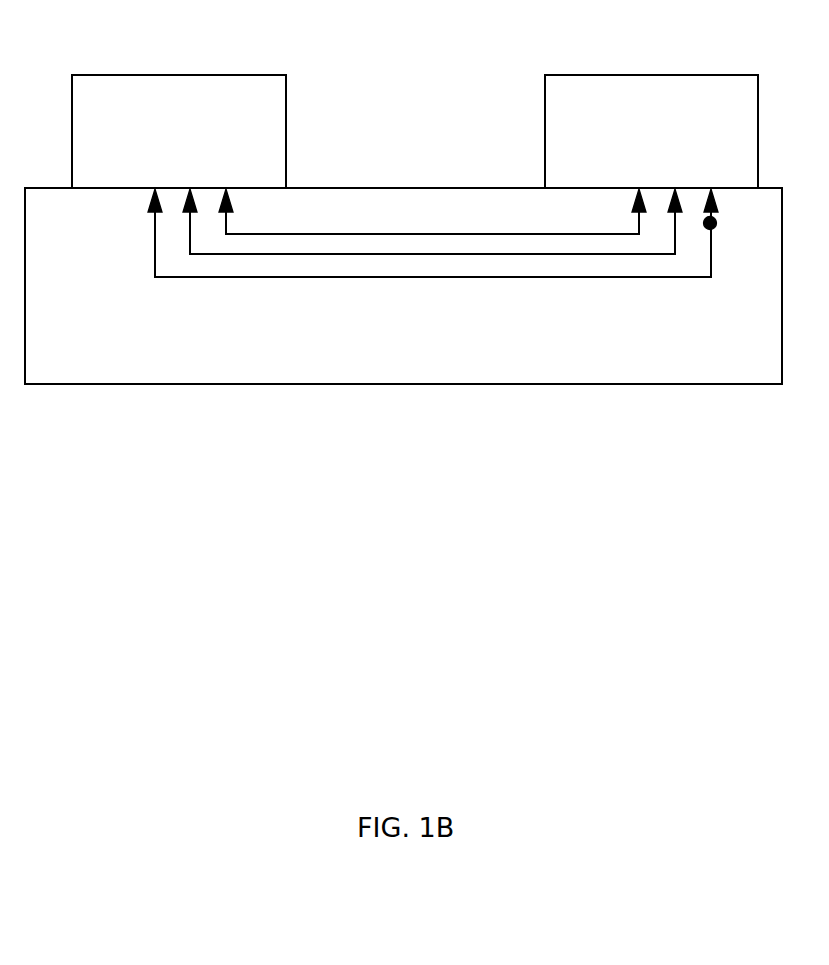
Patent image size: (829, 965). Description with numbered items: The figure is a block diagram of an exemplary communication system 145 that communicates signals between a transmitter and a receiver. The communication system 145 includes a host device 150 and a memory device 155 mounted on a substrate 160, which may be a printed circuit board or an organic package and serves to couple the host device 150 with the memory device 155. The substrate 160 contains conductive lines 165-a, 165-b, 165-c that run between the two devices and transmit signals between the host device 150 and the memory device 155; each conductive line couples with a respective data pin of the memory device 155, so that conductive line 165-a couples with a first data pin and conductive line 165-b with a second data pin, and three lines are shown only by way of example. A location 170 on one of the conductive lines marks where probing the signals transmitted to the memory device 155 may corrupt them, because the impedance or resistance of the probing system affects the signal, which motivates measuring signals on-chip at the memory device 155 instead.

The communication system 145 is at (708, 646).
The host device 150 is at (202, 75).
The memory device 155 is at (668, 75).
The substrate 160 is at (403, 286).
The conductive line 165-a is at (305, 277).
The conductive line 165-b is at (400, 254).
The conductive line 165-c is at (497, 234).
The location 170 is at (716, 227).